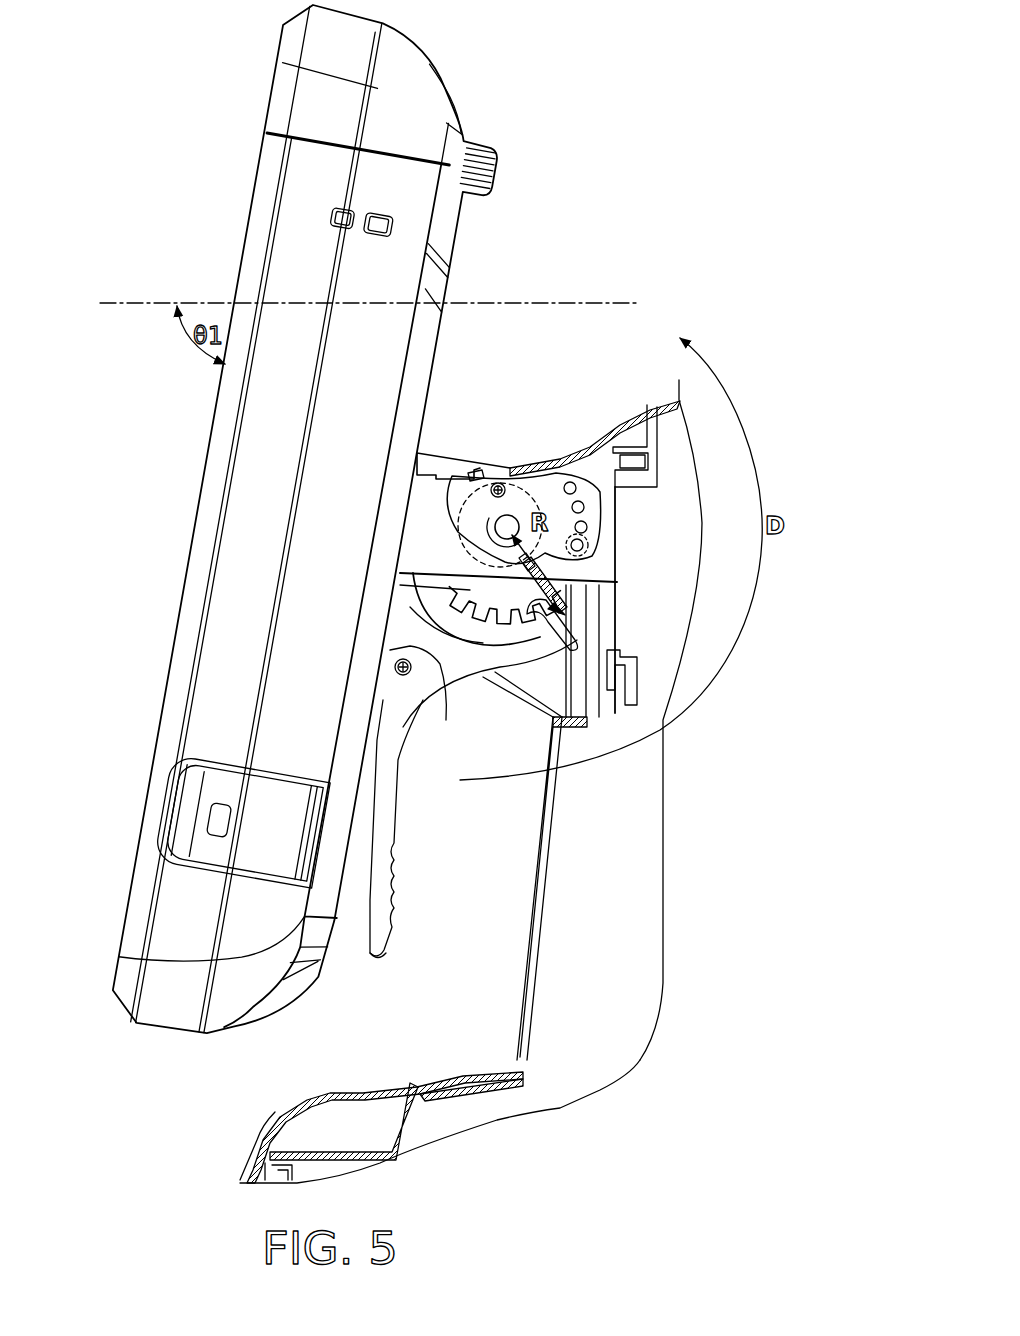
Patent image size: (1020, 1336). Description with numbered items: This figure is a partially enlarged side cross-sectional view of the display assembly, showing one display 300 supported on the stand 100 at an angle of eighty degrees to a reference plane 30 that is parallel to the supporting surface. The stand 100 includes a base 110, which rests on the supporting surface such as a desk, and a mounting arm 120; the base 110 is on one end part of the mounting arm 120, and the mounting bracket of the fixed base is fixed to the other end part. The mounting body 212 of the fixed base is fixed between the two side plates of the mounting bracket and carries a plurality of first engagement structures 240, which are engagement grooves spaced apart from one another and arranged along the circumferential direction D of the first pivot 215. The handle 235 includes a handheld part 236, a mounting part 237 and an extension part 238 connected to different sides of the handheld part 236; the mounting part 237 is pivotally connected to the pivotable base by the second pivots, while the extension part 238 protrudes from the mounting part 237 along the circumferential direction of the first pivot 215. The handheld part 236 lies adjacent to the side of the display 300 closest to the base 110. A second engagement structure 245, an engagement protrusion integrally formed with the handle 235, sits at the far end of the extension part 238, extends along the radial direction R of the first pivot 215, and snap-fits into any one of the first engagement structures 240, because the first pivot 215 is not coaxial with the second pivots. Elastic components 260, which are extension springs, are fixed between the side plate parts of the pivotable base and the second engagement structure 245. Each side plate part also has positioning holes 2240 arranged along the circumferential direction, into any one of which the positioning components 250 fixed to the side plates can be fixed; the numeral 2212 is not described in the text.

The reference plane 30 is at (555, 302).
The stand 100 is at (667, 390).
The base 110 is at (323, 1090).
The mounting arm 120 is at (537, 872).
The mounting body 212 is at (462, 581).
The first pivot 215 is at (558, 465).
The handle 235 is at (412, 765).
The handheld part 236 is at (387, 932).
The mounting part 237 is at (446, 700).
The extension part 238 is at (511, 700).
The first engagement structures 240 is at (574, 638).
The second engagement structure 245 is at (590, 705).
The positioning components 250 is at (582, 538).
The elastic components 260 is at (548, 578).
The display 300 is at (262, 435).
The plate edge 2212 is at (518, 468).
The positioning holes 2240 is at (548, 486).